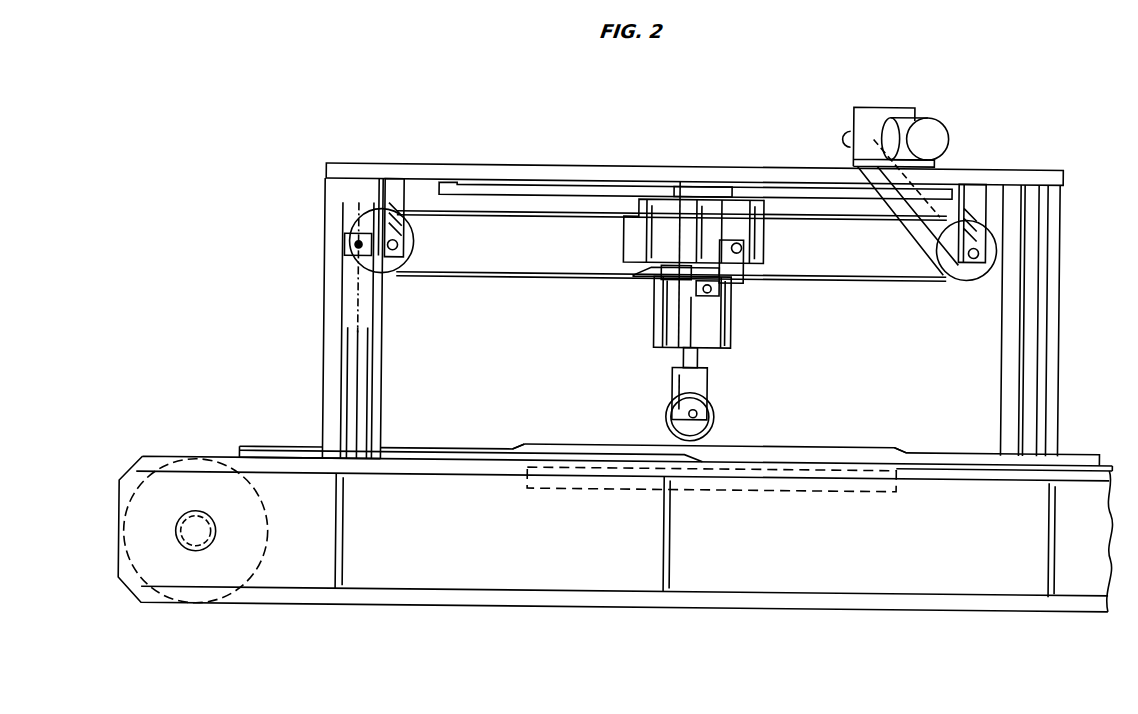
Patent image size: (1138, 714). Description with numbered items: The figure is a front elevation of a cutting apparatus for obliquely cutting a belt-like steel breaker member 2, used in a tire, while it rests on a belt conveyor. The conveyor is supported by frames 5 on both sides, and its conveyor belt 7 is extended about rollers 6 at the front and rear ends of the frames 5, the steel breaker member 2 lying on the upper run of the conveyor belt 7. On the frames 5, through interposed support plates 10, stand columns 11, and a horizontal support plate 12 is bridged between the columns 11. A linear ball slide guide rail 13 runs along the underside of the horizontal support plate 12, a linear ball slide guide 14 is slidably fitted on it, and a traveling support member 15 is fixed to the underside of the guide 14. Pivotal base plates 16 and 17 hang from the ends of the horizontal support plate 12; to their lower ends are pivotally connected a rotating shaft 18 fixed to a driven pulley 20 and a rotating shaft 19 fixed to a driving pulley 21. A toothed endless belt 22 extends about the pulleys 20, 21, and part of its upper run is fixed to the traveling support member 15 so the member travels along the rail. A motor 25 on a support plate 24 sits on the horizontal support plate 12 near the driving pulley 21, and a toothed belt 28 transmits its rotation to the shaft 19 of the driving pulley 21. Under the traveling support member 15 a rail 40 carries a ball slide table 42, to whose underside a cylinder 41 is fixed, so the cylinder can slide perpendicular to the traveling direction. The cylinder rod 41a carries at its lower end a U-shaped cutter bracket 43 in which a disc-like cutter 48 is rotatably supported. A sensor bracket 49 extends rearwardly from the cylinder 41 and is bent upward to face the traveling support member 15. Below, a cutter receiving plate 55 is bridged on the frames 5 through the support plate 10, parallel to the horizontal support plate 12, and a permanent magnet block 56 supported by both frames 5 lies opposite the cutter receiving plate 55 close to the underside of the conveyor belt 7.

The steel breaker member 2 is at (975, 450).
The frame 5 is at (266, 465).
The roller 6 is at (268, 524).
The conveyor belt 7 is at (905, 455).
The support plate 10 is at (345, 452).
The column 11 is at (323, 335).
The horizontal support plate 12 is at (700, 186).
The linear ball slide guide rail 13 is at (610, 181).
The linear ball slide guide 14 is at (724, 186).
The traveling support member 15 is at (622, 247).
The pivotal base plate 16 is at (408, 190).
The pivotal base plate 17 is at (978, 215).
The rotating shaft 18 is at (392, 272).
The rotating shaft 19 is at (965, 280).
The driven pulley 20 is at (415, 246).
The driving pulley 21 is at (972, 278).
The toothed endless belt 22 is at (812, 278).
The support plate 24 is at (878, 105).
The motor 25 is at (922, 115).
The toothed belt 28 is at (905, 244).
The rail 40 is at (680, 276).
The cylinder 41 is at (658, 333).
The cylinder rod 41a is at (683, 358).
The ball slide table 42 is at (640, 272).
The U-shaped cutter bracket 43 is at (672, 383).
The disc-like cutter 48 is at (714, 415).
The sensor bracket 49 is at (735, 282).
The cutter receiving plate 55 is at (443, 450).
The permanent magnet block 56 is at (708, 490).